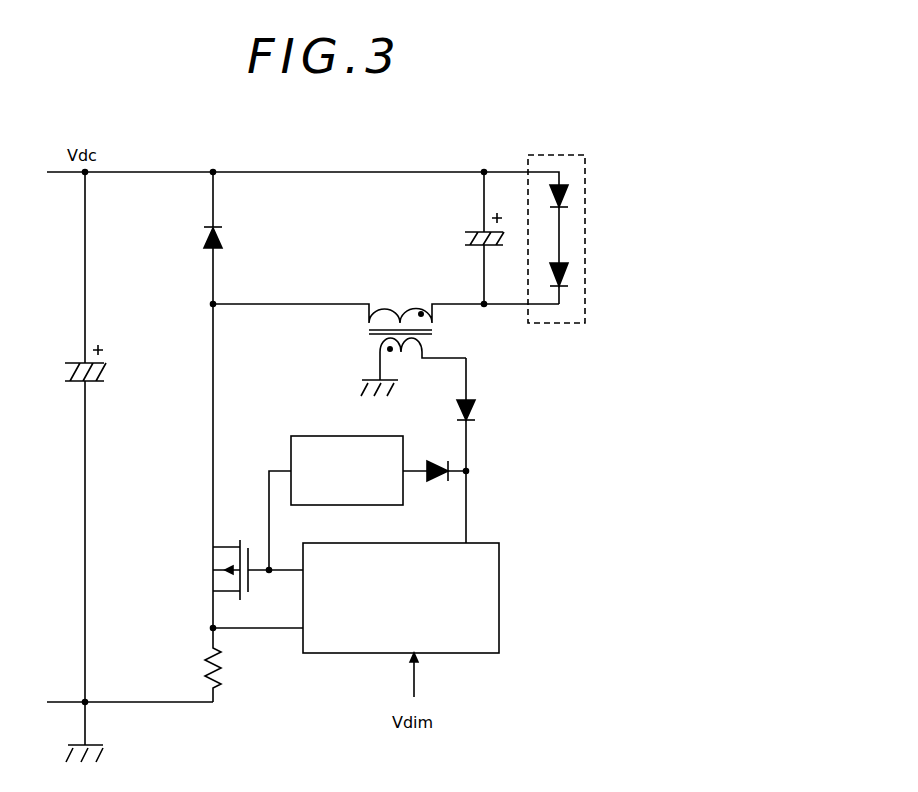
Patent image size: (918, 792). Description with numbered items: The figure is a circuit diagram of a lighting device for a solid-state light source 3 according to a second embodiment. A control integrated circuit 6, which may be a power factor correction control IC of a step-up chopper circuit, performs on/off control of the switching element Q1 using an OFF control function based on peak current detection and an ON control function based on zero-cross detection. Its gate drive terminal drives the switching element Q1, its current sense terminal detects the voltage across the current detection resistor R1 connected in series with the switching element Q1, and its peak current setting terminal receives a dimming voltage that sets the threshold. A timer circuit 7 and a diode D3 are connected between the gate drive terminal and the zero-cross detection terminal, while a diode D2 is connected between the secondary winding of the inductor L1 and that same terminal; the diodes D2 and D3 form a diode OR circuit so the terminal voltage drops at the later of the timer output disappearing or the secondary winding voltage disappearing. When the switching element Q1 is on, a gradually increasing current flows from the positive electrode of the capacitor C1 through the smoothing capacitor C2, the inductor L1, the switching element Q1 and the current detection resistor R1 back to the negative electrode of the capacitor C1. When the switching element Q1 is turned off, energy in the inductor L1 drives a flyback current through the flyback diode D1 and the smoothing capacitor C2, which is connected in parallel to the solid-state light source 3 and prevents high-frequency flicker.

The solid-state light source 3 is at (537, 156).
The control integrated circuit 6 is at (417, 543).
The timer circuit 7 is at (310, 436).
The capacitor C1 is at (70, 458).
The smoothing capacitor C2 is at (468, 238).
The flyback diode D1 is at (198, 238).
The diode D2 is at (481, 450).
The diode D3 is at (434, 457).
The inductor L1 is at (386, 339).
The switching element Q1 is at (241, 466).
The current detection resistor R1 is at (199, 665).